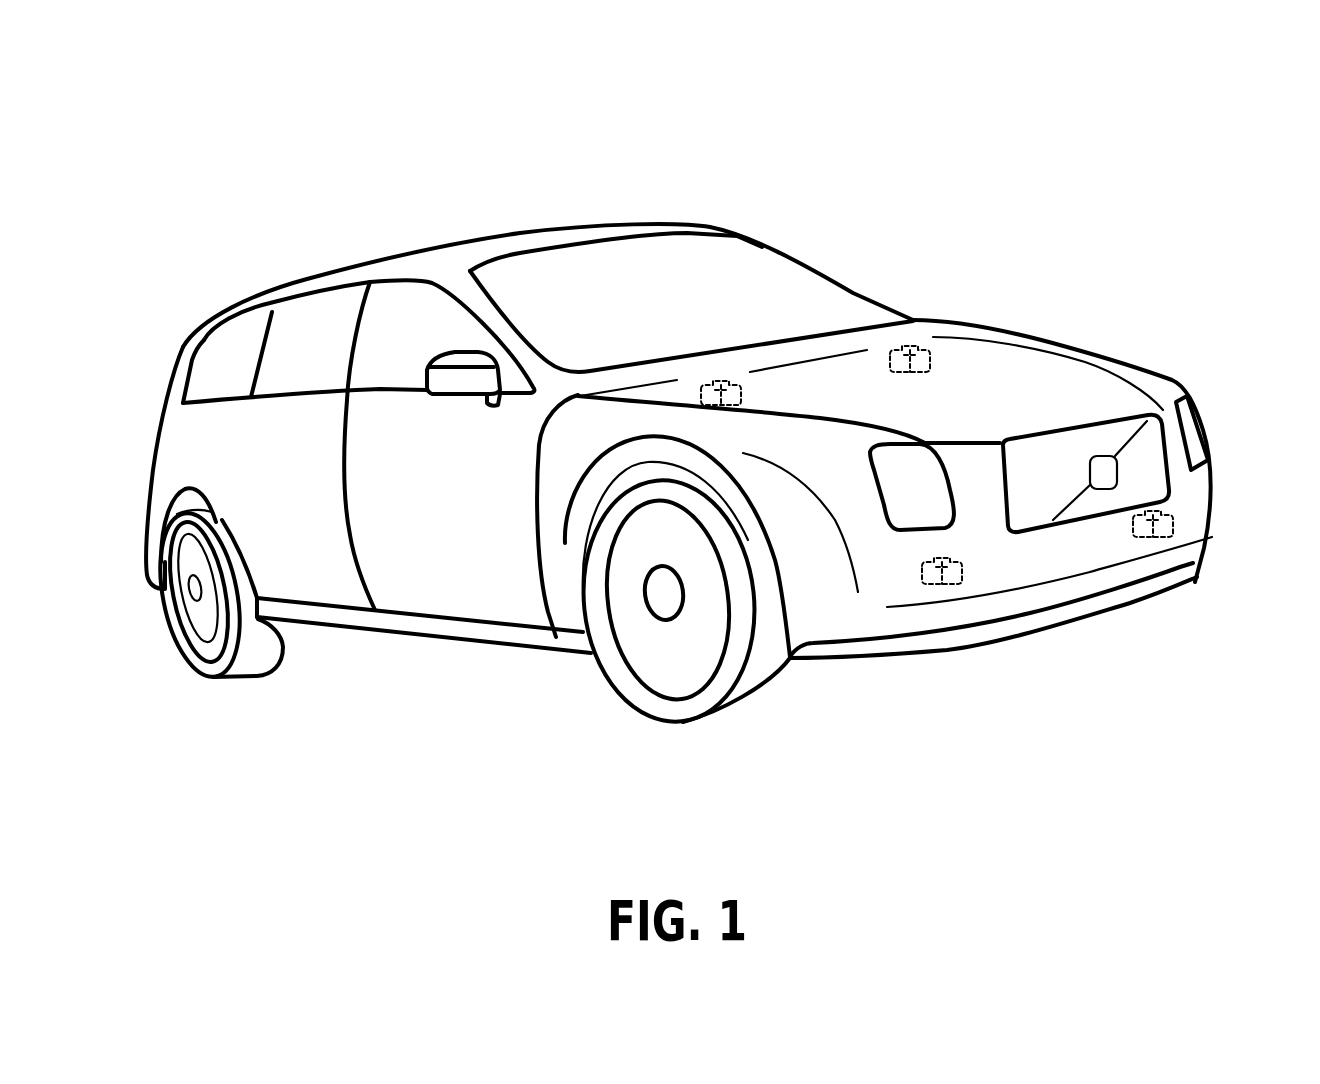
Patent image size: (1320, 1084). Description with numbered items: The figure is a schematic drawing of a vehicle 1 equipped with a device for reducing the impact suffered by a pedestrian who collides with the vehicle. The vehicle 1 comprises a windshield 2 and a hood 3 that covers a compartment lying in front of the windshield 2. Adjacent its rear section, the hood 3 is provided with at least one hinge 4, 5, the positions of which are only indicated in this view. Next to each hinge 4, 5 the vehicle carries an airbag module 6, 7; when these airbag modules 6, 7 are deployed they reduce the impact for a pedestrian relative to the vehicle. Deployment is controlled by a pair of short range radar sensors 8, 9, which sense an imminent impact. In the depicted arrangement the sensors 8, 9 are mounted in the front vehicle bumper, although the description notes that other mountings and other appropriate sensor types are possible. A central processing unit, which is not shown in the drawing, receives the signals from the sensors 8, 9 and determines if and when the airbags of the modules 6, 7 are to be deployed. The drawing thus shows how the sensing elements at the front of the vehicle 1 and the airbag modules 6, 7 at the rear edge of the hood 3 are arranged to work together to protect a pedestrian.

The vehicle 1 is at (603, 203).
The windshield 2 is at (597, 270).
The hood 3 is at (1065, 380).
The hinge 4 is at (993, 315).
The hinge 5 is at (740, 430).
The airbag module 6 is at (913, 348).
The airbag module 7 is at (727, 383).
The short range radar sensor 8 is at (1152, 538).
The short range radar sensor 9 is at (941, 584).